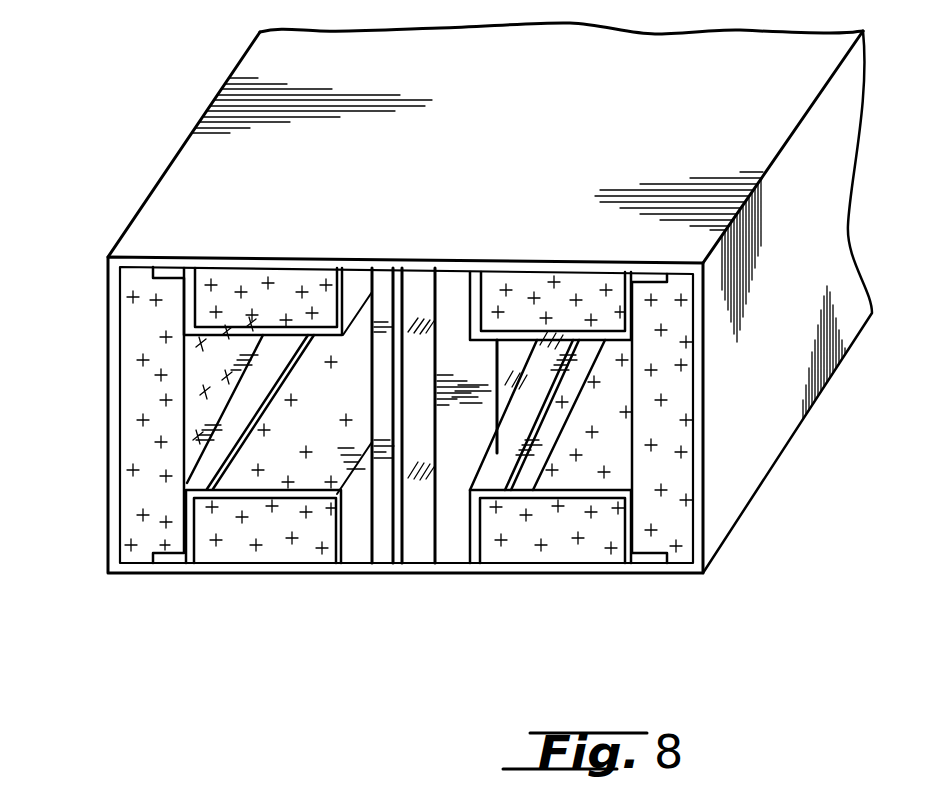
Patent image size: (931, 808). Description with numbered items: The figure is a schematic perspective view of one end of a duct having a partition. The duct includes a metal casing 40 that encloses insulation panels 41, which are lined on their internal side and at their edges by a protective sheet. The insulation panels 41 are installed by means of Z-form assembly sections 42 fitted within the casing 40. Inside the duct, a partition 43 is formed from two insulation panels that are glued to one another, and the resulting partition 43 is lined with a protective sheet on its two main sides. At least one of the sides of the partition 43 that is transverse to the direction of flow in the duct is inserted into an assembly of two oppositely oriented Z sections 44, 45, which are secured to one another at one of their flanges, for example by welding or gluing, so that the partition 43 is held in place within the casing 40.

The metal casing 40 is at (778, 427).
The insulation panels 41 is at (218, 282).
The Z-form assembly sections 42 is at (198, 295).
The partition 43 is at (566, 338).
The Z section 44 is at (386, 502).
The Z section 45 is at (454, 500).